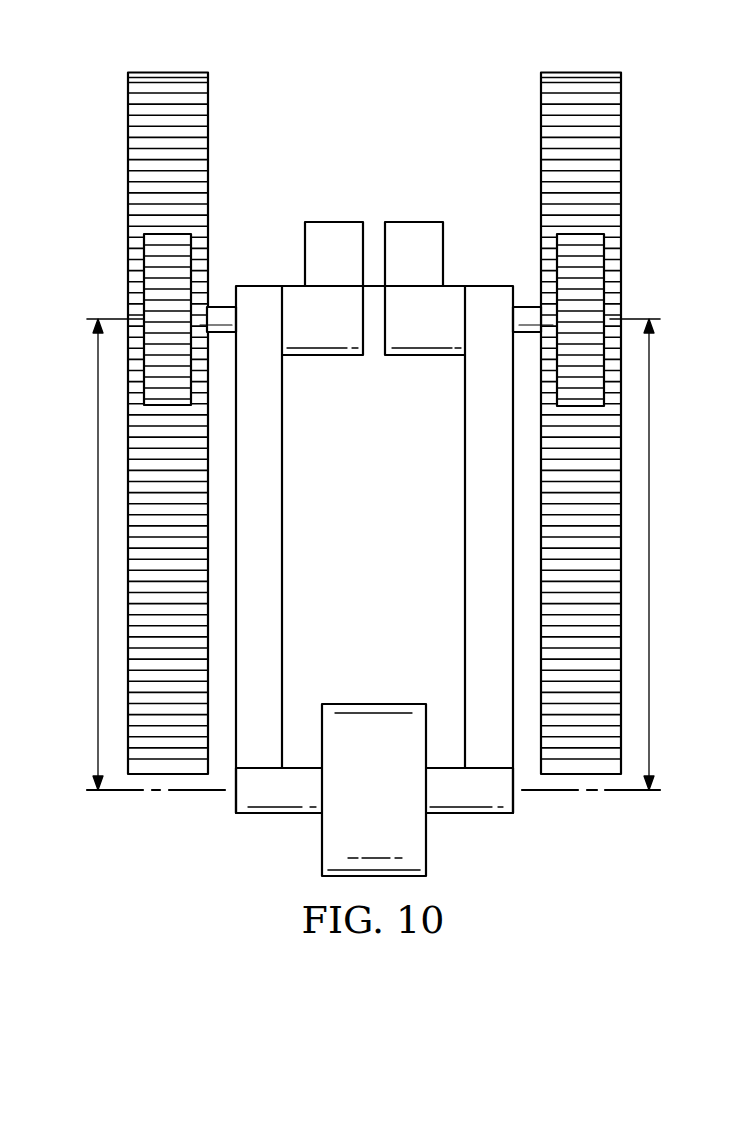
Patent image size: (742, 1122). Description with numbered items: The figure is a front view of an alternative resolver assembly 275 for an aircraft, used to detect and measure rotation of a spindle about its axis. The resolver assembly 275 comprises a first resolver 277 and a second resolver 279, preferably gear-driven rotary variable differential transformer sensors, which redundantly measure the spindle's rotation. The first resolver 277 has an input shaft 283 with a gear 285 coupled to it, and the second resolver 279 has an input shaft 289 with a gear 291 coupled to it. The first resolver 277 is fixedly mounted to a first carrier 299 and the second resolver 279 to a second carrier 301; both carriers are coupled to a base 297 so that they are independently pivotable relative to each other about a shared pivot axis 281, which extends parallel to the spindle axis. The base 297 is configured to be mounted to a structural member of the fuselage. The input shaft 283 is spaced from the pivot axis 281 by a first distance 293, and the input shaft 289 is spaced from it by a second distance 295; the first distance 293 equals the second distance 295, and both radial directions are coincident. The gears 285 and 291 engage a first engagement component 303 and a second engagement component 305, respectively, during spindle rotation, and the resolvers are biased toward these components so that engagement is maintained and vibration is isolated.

The resolver assembly 275 is at (427, 850).
The first resolver 277 is at (334, 222).
The second resolver 279 is at (413, 222).
The pivot axis 281 is at (552, 793).
The input shaft 283 is at (221, 306).
The gear 285 is at (153, 280).
The input shaft 289 is at (528, 306).
The gear 291 is at (593, 278).
The first distance 293 is at (98, 580).
The second distance 295 is at (655, 548).
The base 297 is at (322, 836).
The first carrier 299 is at (273, 530).
The second carrier 301 is at (474, 563).
The first engagement component 303 is at (168, 72).
The second engagement component 305 is at (582, 72).